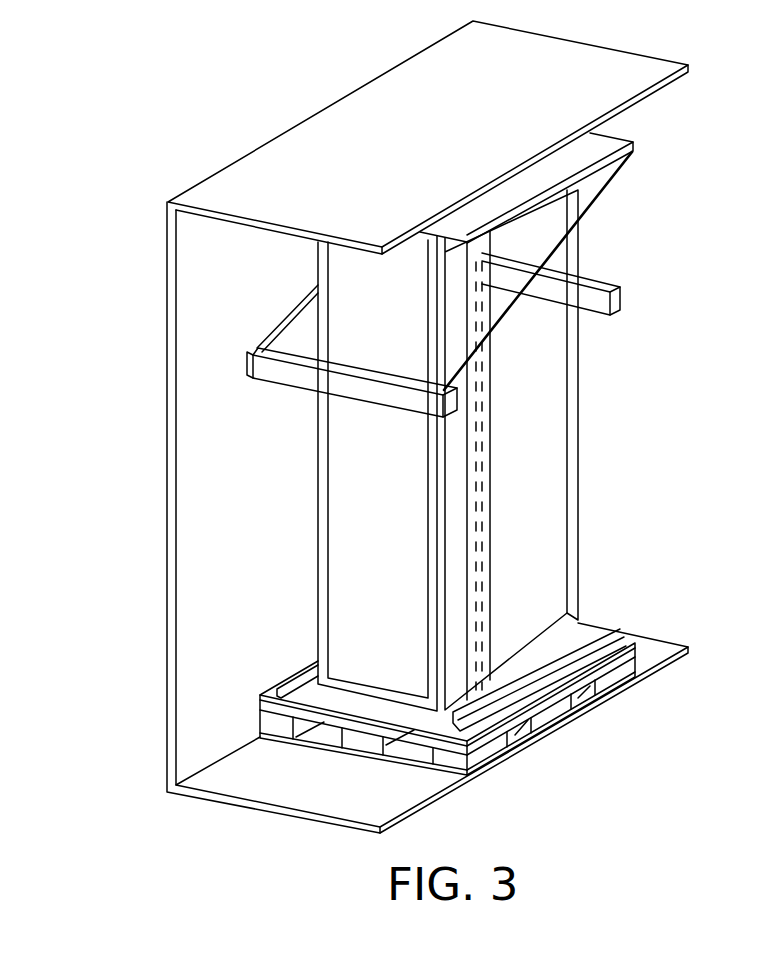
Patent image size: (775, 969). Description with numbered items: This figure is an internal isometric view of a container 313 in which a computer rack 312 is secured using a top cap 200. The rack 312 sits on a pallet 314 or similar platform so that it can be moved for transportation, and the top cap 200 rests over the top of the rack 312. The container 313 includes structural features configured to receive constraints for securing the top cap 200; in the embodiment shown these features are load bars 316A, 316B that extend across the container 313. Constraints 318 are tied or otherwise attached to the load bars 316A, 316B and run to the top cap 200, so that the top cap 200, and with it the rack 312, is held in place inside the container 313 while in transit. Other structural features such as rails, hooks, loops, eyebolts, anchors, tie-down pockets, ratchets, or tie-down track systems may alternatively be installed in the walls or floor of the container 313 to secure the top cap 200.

The top cap 200 is at (603, 141).
The rack 312 is at (525, 493).
The container 313 is at (212, 515).
The pallet 314 is at (530, 727).
The load bar 316A is at (632, 311).
The load bar 316B is at (287, 378).
The constraint 318 is at (510, 313).